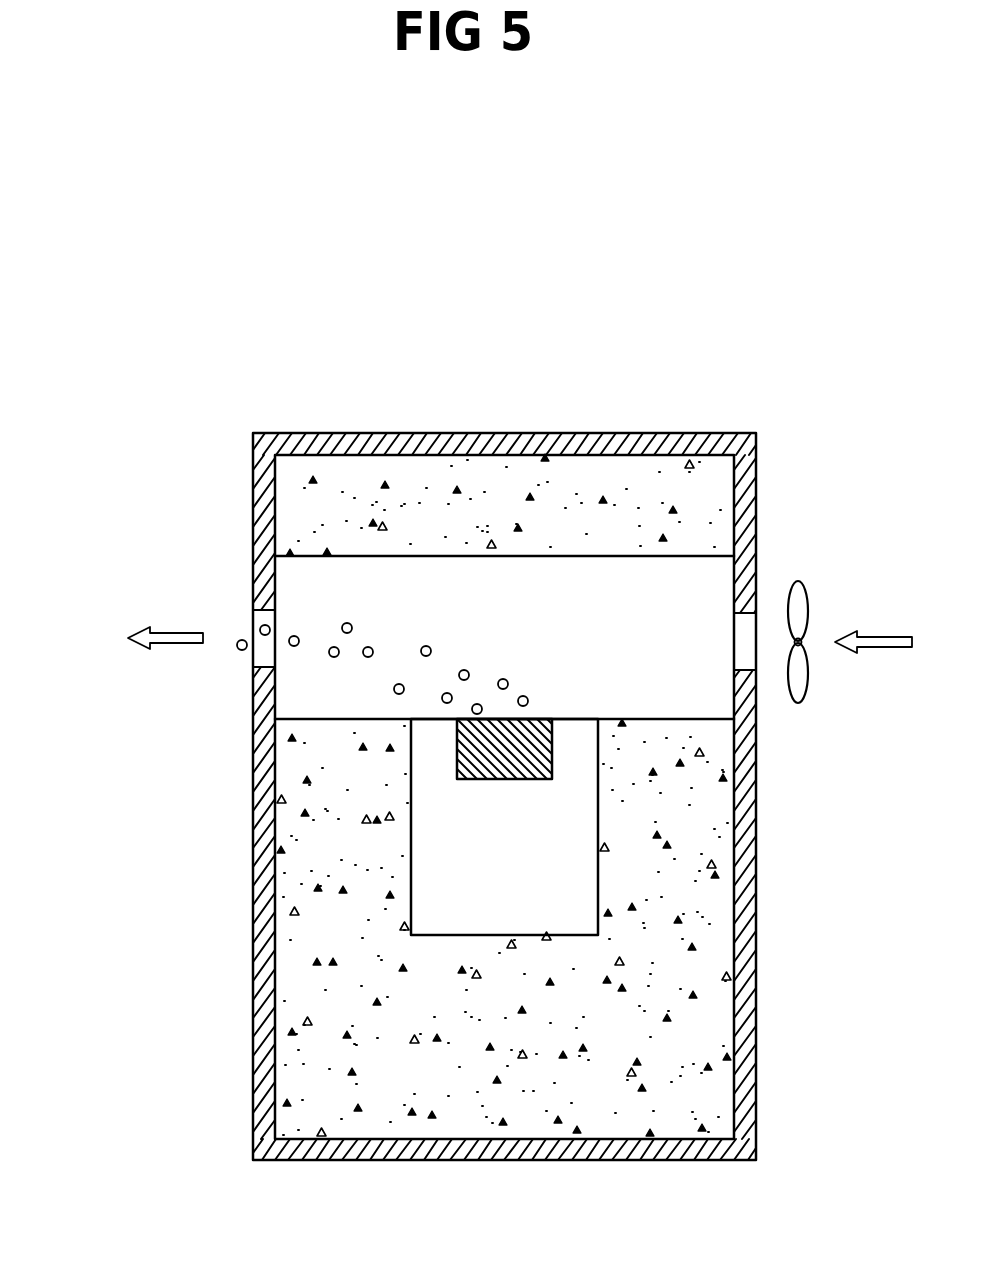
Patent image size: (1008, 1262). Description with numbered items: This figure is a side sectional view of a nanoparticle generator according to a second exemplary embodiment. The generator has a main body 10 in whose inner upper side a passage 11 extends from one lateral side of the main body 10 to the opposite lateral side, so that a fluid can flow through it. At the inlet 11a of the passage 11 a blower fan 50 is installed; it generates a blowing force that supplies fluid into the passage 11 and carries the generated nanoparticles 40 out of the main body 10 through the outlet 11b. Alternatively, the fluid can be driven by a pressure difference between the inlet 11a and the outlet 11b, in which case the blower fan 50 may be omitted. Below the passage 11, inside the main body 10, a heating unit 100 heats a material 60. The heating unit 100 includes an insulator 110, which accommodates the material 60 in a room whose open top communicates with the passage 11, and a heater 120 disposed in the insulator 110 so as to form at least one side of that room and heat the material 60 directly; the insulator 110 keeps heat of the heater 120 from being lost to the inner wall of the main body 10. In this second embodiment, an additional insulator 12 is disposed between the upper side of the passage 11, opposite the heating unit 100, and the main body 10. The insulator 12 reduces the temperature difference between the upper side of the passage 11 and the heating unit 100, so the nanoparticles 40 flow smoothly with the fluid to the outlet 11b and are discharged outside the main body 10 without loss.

The main body 10 is at (745, 885).
The passage 11 is at (630, 626).
The inlet 11a is at (757, 620).
The outlet 11b is at (256, 618).
The insulator 12 is at (500, 489).
The nanoparticles 40 is at (347, 623).
The blower fan 50 is at (802, 680).
The material 60 is at (457, 750).
The heating unit 100 is at (115, 833).
The insulator 110 is at (337, 988).
The heater 120 is at (447, 862).